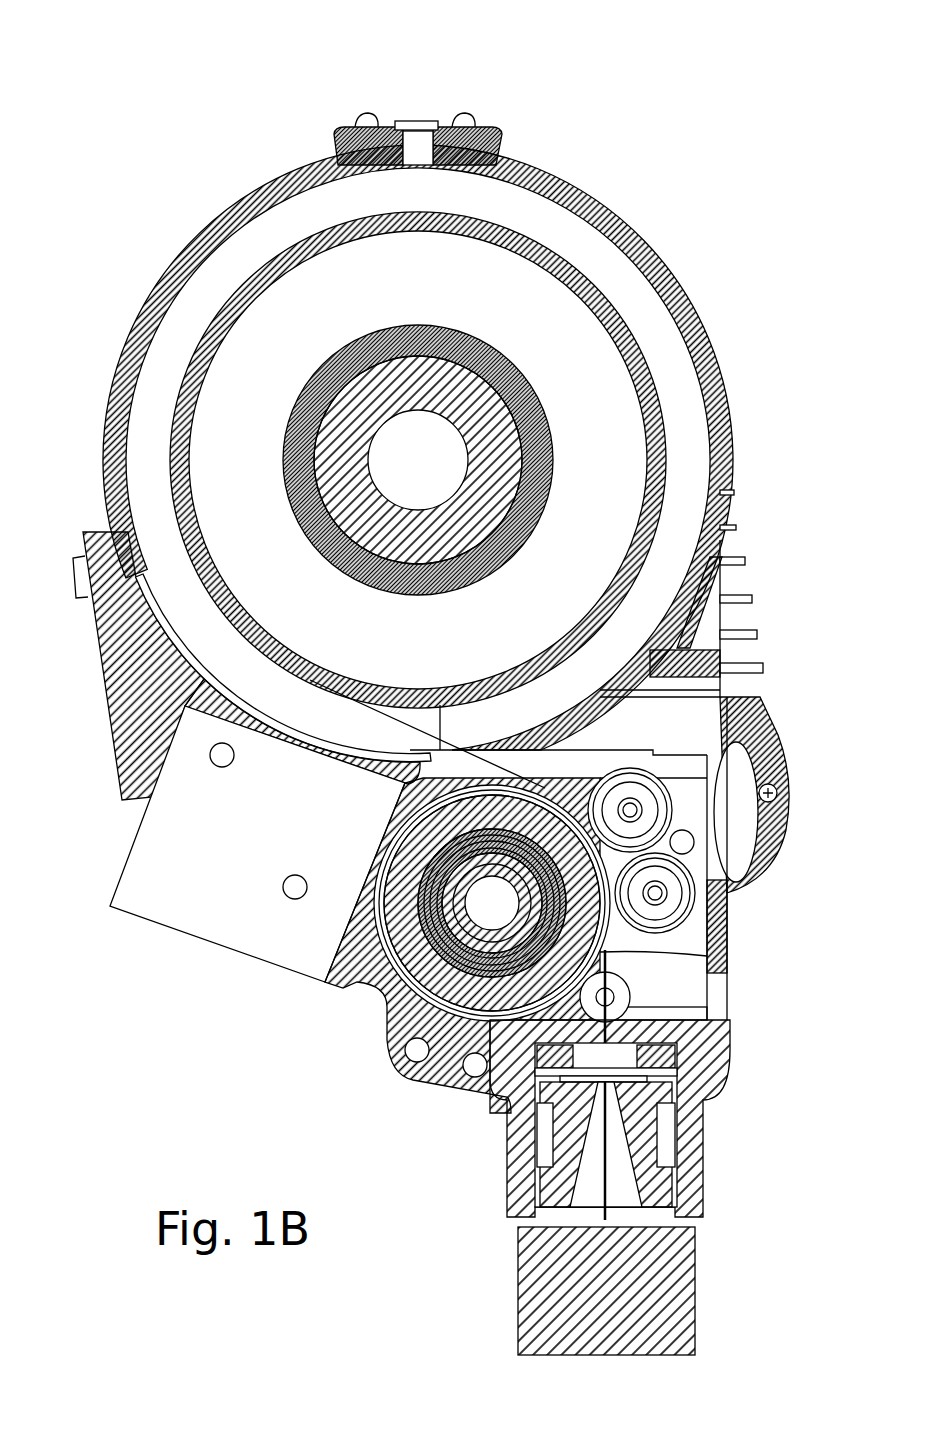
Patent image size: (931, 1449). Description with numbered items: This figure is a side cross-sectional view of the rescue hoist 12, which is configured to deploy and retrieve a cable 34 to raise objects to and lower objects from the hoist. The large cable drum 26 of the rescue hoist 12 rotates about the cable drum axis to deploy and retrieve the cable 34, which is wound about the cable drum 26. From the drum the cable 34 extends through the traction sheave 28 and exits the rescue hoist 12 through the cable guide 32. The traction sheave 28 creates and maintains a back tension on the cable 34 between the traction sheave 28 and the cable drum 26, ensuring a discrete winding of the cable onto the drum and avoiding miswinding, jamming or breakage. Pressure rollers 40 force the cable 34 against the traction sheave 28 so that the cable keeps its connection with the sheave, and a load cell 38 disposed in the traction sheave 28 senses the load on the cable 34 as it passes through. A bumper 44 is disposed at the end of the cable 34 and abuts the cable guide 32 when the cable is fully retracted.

The rescue hoist 12 is at (146, 99).
The cable drum 26 is at (223, 275).
The traction sheave 28 is at (387, 1040).
The cable guide 32 is at (637, 1137).
The cable 34 is at (707, 957).
The load cell 38 is at (487, 893).
The pressure rollers 40 is at (727, 900).
The bumper 44 is at (658, 1282).